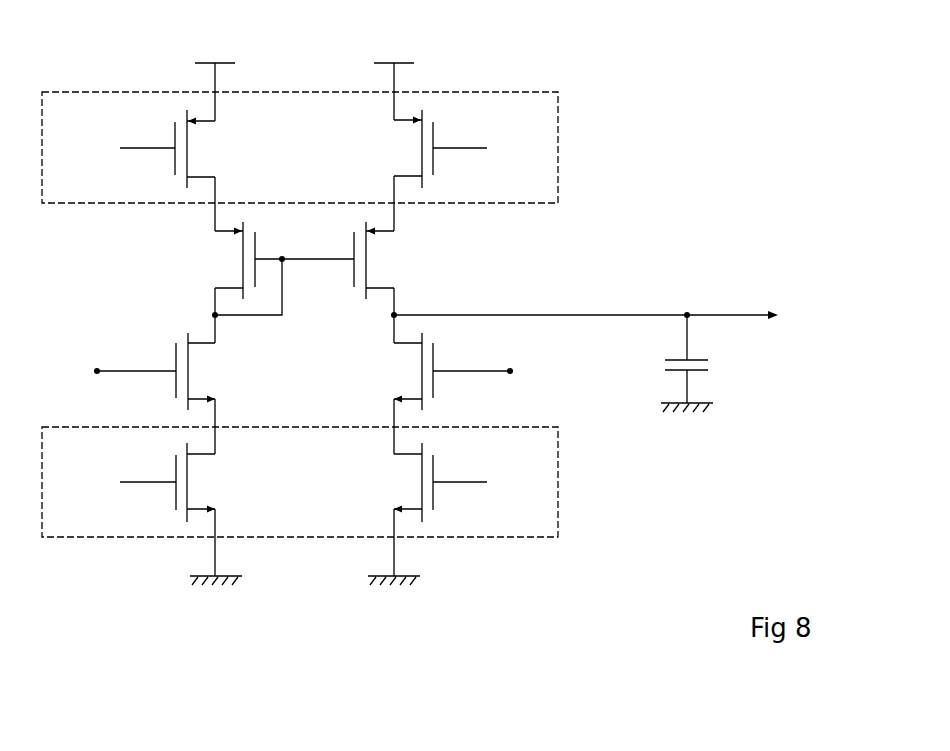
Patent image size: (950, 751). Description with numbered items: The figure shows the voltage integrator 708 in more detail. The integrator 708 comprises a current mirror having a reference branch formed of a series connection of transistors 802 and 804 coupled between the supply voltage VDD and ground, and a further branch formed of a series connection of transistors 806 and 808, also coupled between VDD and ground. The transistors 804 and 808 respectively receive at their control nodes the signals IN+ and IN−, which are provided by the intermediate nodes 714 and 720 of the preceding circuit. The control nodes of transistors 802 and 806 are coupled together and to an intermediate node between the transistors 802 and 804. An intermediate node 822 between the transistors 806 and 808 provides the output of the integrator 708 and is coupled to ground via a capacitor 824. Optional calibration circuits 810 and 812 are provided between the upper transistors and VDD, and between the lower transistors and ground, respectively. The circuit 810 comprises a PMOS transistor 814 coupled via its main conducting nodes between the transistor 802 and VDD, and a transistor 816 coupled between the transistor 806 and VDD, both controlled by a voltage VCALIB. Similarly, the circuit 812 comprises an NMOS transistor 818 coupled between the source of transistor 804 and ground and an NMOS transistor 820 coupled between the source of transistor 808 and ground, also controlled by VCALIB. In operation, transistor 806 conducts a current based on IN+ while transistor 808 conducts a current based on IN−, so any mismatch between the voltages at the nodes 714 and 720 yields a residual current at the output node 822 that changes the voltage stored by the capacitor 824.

The voltage integrator 708 is at (668, 60).
The intermediate node 714 is at (97, 372).
The intermediate node 720 is at (513, 373).
The transistor 802 is at (228, 258).
The transistor 804 is at (198, 366).
The transistor 806 is at (377, 260).
The transistor 808 is at (407, 375).
The calibration circuit 810 is at (552, 169).
The calibration circuit 812 is at (552, 517).
The PMOS transistor 814 is at (204, 147).
The transistor 816 is at (406, 148).
The NMOS transistor 818 is at (196, 485).
The NMOS transistor 820 is at (410, 482).
The intermediate node 822 is at (397, 313).
The capacitor 824 is at (712, 368).